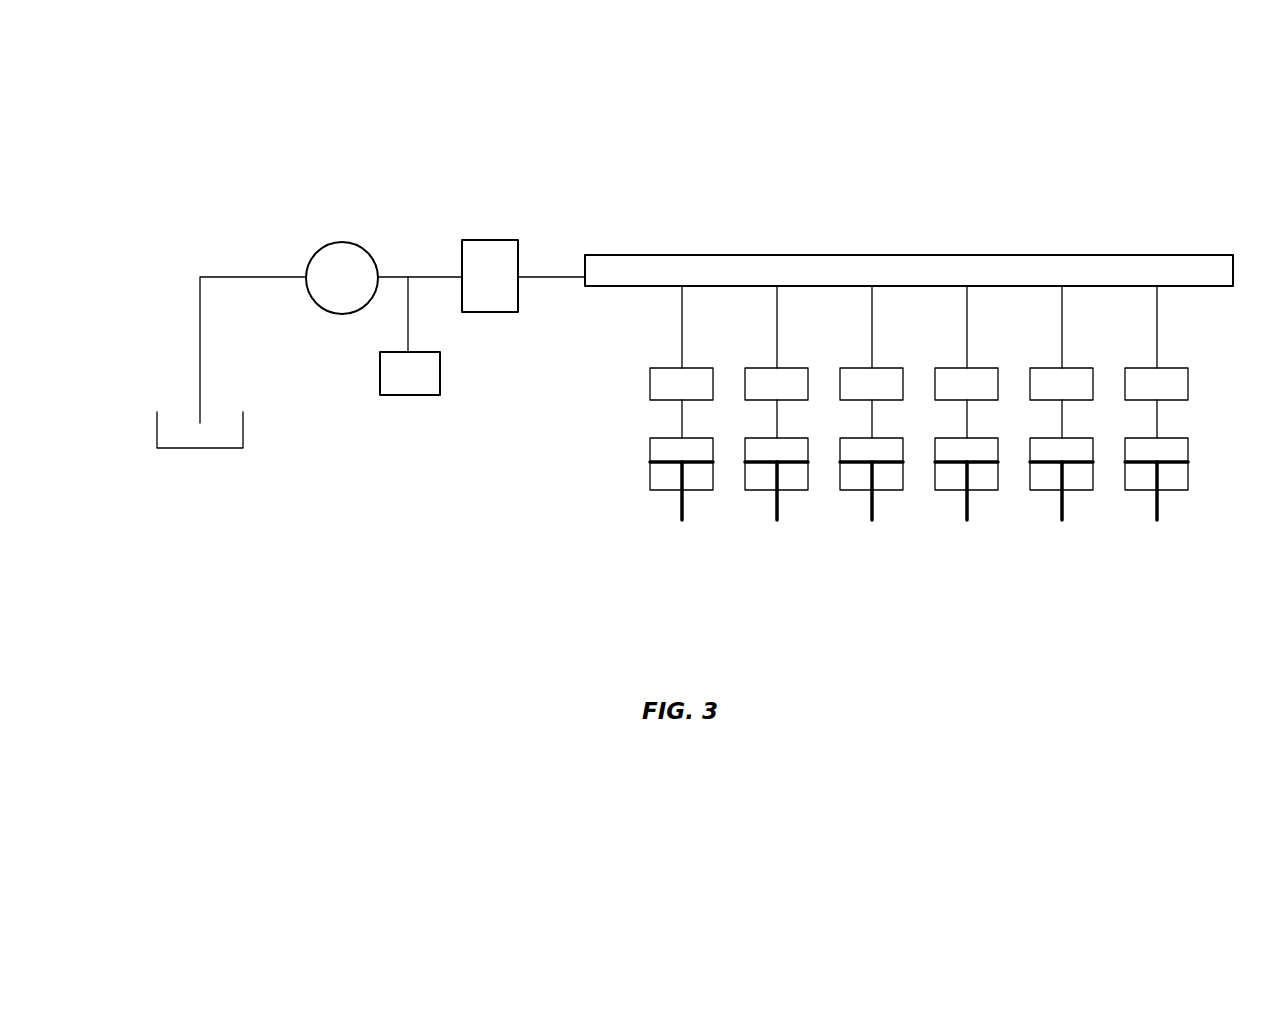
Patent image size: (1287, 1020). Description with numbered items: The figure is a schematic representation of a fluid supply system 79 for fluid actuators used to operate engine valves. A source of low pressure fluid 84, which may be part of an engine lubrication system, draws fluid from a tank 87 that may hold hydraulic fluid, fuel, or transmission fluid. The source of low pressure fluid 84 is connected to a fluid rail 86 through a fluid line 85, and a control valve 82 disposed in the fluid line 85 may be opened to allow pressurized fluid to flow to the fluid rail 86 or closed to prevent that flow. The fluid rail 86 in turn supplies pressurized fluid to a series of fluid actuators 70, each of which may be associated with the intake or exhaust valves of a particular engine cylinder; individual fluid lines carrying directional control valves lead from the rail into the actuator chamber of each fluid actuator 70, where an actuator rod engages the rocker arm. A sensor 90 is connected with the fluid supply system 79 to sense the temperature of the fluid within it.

The fluid actuator 70 is at (610, 464).
The fluid supply system 79 is at (679, 163).
The control valve 82 is at (490, 240).
The source of low pressure fluid 84 is at (340, 242).
The fluid line 85 is at (428, 275).
The fluid rail 86 is at (868, 255).
The tank 87 is at (200, 448).
The sensor 90 is at (408, 395).